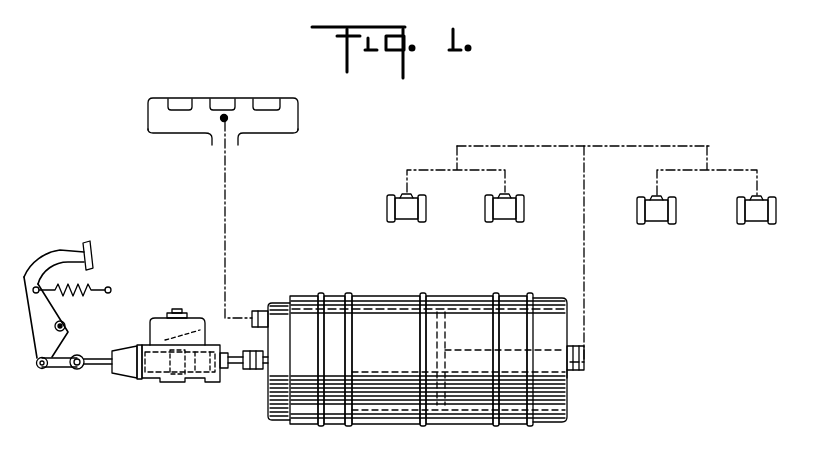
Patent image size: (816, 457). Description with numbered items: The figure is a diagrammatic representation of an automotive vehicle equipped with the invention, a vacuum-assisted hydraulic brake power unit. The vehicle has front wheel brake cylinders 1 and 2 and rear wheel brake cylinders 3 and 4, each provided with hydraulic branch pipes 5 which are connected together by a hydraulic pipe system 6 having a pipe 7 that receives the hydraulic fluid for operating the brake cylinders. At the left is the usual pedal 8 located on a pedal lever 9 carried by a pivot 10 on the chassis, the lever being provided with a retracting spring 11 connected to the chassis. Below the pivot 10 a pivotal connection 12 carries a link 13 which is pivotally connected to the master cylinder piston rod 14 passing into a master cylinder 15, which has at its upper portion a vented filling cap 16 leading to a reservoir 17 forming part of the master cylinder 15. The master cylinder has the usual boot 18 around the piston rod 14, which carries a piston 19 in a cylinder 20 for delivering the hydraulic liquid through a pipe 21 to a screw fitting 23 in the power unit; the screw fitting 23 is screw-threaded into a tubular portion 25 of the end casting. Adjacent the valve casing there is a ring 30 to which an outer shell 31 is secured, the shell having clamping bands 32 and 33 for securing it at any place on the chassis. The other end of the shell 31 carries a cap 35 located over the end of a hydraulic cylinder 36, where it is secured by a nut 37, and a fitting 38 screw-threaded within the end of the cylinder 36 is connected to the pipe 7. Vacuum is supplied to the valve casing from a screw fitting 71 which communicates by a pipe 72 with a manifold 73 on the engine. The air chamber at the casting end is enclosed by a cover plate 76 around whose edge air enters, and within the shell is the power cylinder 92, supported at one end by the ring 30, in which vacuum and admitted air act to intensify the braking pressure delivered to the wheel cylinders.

The front wheel brake cylinder 1 is at (406, 214).
The front wheel brake cylinder 2 is at (504, 214).
The rear wheel brake cylinder 3 is at (656, 216).
The rear wheel brake cylinder 4 is at (756, 216).
The hydraulic branch pipe 5 is at (708, 153).
The hydraulic pipe system 6 is at (578, 146).
The pipe 7 is at (585, 279).
The pedal 8 is at (90, 250).
The pedal lever 9 is at (50, 258).
The pivot 10 is at (66, 327).
The retracting spring 11 is at (80, 287).
The pivotal connection 12 is at (40, 369).
The link 13 is at (62, 369).
The master cylinder piston rod 14 is at (95, 366).
The master cylinder 15 is at (155, 335).
The filling cap 16 is at (182, 312).
The reservoir 17 is at (202, 325).
The boot 18 is at (127, 370).
The piston 19 is at (180, 374).
The cylinder 20 is at (202, 372).
The pipe 21 is at (231, 368).
The screw fitting 23 is at (245, 352).
The tubular portion 25 is at (255, 368).
The ring 30 is at (320, 296).
The outer shell 31 is at (468, 300).
The clamping band 32 is at (345, 297).
The clamping band 33 is at (511, 300).
The cap 35 is at (550, 300).
The hydraulic cylinder 36 is at (452, 350).
The nut 37 is at (570, 372).
The fitting 38 is at (584, 364).
The screw fitting 71 is at (262, 311).
The pipe 72 is at (226, 205).
The manifold 73 is at (284, 131).
The cover plate 76 is at (281, 412).
The power cylinder 92 is at (390, 300).